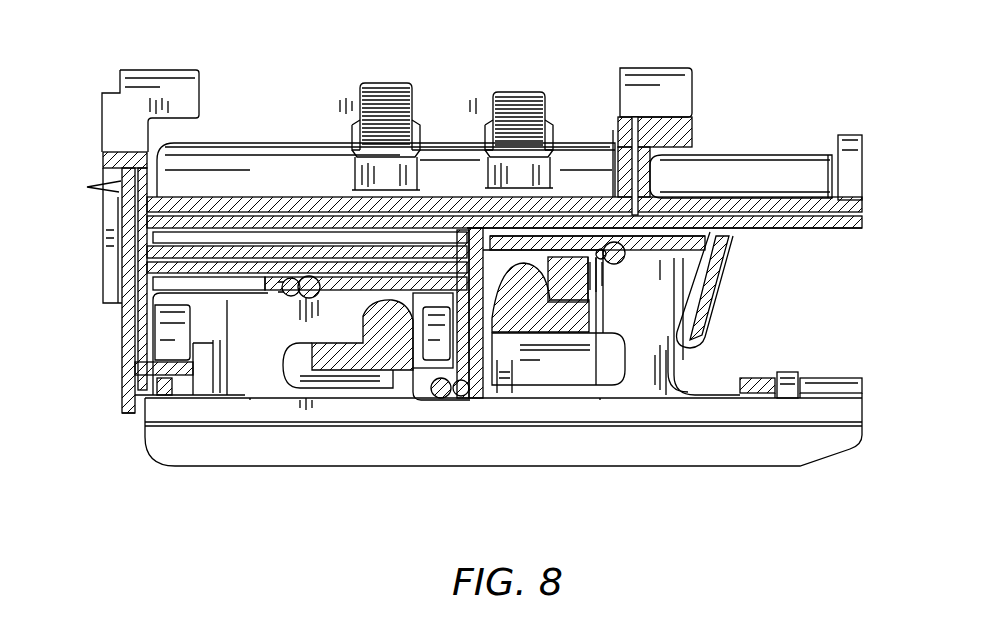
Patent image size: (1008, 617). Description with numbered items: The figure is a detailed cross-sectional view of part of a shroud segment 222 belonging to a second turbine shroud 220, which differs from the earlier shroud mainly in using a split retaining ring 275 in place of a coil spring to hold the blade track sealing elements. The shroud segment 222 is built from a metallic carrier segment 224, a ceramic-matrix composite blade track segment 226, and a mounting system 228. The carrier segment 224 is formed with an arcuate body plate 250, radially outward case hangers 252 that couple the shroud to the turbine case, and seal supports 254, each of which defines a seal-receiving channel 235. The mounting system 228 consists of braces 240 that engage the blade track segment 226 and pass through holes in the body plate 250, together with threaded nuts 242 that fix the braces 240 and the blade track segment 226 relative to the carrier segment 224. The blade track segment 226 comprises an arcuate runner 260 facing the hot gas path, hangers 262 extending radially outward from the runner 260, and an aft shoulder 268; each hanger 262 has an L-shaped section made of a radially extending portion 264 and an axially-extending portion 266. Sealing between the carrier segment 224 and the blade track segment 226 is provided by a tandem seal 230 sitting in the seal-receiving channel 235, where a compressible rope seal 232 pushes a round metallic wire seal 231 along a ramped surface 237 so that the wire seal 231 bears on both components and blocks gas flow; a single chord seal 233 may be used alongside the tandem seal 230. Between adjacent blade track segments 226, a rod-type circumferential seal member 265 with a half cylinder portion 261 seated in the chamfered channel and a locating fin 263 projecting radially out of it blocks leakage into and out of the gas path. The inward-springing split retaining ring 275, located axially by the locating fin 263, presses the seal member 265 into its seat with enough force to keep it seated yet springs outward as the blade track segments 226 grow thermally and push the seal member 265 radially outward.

The second turbine shroud 220 is at (746, 57).
The shroud segment 222 is at (788, 74).
The carrier segment 224 is at (792, 153).
The blade track segment 226 is at (718, 469).
The mounting system 228 is at (551, 91).
The tandem seal 230 is at (291, 275).
The wire seal 231 is at (310, 311).
The rope seal 232 is at (221, 382).
The single chord seal 233 is at (631, 262).
The seal-receiving channel 235 is at (313, 275).
The ramped surface 237 is at (290, 311).
The brace 240 is at (425, 299).
The threaded nut 242 is at (416, 169).
The body plate 250 is at (236, 141).
The case hanger 252 is at (161, 68).
The seal support 254 is at (304, 275).
The runner 260 is at (626, 468).
The half cylinder portion 261 is at (797, 417).
The hanger 262 is at (206, 397).
The locating fin 263 is at (515, 383).
The radially extending portion 264 is at (669, 362).
The circumferential seal member 265 is at (761, 428).
The axially-extending portion 266 is at (643, 213).
The aft shoulder 268 is at (850, 376).
The retaining ring 275 is at (761, 376).